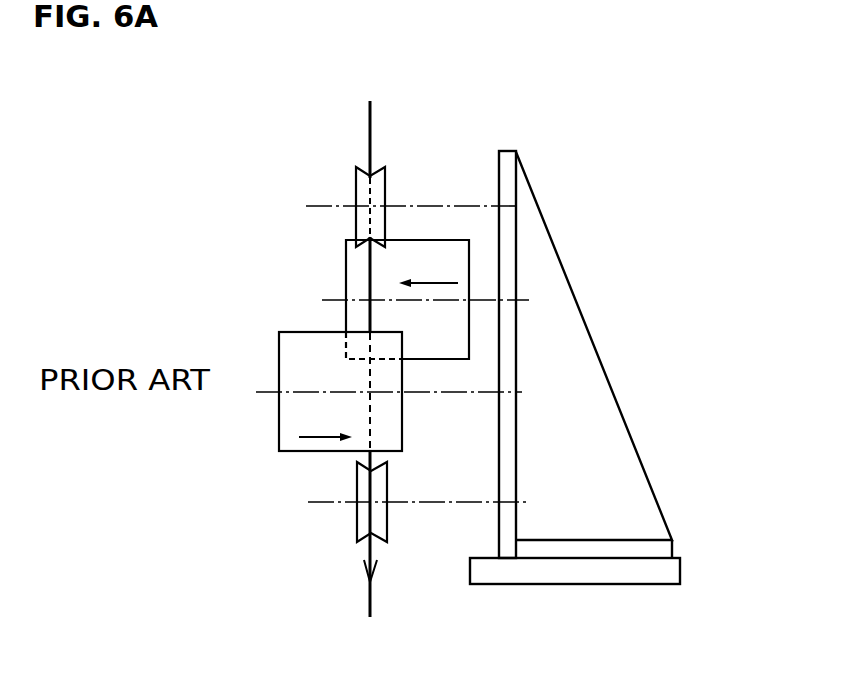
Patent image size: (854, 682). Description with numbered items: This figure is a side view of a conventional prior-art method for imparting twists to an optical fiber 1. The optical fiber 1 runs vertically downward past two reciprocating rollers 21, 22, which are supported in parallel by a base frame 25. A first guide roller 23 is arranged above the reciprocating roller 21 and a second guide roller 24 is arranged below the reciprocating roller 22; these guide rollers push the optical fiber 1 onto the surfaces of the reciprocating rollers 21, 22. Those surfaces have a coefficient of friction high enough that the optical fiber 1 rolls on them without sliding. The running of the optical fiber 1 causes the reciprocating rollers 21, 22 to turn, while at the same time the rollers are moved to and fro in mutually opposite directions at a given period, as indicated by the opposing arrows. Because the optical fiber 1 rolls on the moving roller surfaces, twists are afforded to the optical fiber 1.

The optical fiber 1 is at (371, 132).
The reciprocating roller 21 is at (385, 265).
The reciprocating roller 22 is at (290, 418).
The first guide roller 23 is at (357, 197).
The second guide roller 24 is at (364, 516).
The base frame 25 is at (619, 457).